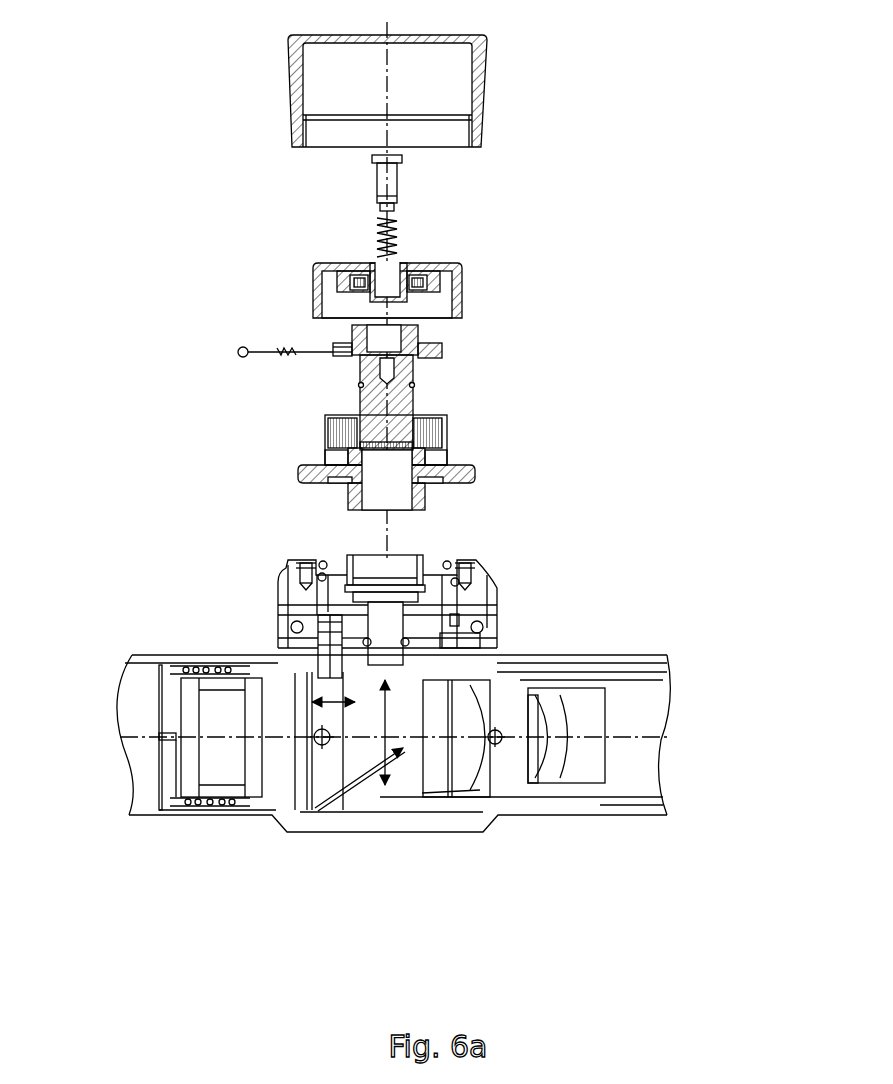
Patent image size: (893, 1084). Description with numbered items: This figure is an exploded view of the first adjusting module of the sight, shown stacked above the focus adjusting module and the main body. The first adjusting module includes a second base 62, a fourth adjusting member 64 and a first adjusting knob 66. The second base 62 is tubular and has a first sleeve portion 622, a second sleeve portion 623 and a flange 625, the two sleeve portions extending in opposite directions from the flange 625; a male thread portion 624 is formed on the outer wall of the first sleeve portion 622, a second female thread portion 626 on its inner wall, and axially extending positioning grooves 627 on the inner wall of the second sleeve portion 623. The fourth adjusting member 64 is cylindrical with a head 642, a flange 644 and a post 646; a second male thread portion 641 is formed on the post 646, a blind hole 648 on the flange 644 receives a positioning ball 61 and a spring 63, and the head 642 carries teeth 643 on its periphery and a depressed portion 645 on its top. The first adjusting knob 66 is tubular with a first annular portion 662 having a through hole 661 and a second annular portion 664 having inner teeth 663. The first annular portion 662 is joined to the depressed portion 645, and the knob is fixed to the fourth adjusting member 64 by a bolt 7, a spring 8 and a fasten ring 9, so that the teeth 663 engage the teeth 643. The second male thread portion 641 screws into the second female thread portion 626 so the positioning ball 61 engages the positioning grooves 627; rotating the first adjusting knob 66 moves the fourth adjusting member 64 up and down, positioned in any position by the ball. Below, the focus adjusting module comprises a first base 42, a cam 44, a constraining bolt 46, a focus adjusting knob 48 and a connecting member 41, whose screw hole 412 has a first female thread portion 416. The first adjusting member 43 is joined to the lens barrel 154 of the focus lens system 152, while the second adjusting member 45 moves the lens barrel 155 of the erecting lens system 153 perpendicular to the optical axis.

The fasten ring 9 is at (377, 257).
The bolt 7 is at (392, 177).
The spring 8 is at (397, 230).
The first adjusting knob 66 is at (363, 239).
The through hole 661 is at (397, 265).
The first annular portion 662 is at (392, 290).
The teeth 663 is at (458, 270).
The second annular portion 664 is at (460, 297).
The fourth adjusting member 64 is at (359, 338).
The teeth 643 is at (350, 328).
The head 642 is at (420, 328).
The blind hole 648 is at (335, 345).
The depressed portion 645 is at (425, 325).
The flange 644 is at (425, 376).
The second male thread portion 641 is at (413, 405).
The post 646 is at (417, 392).
The spring 63 is at (293, 352).
The positioning ball 61 is at (238, 352).
The second base 62 is at (455, 458).
The positioning grooves 627 is at (350, 430).
The second sleeve portion 623 is at (447, 437).
The male thread portion 624 is at (325, 498).
The flange 625 is at (462, 480).
The second female thread portion 626 is at (370, 512).
The first sleeve portion 622 is at (430, 502).
The connecting member 41 is at (353, 666).
The screw hole 412 is at (347, 557).
The first female thread portion 416 is at (422, 548).
The constraining bolt 46 is at (298, 570).
The focus adjusting knob 48 is at (485, 587).
The cam 44 is at (285, 600).
The second adjusting member 45 is at (460, 615).
The first base 42 is at (483, 636).
The first adjusting member 43 is at (325, 620).
The lens barrel 154 is at (135, 665).
The lens barrel 155 is at (422, 793).
The focus lens system 152 is at (337, 815).
The erecting lens system 153 is at (663, 805).